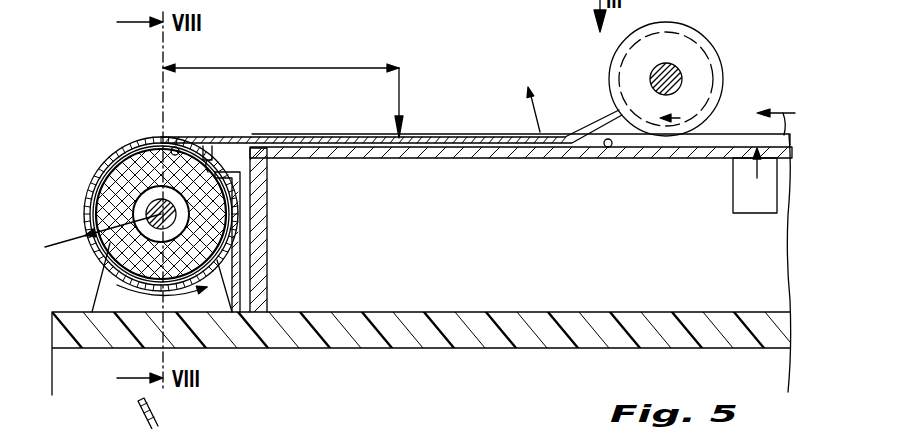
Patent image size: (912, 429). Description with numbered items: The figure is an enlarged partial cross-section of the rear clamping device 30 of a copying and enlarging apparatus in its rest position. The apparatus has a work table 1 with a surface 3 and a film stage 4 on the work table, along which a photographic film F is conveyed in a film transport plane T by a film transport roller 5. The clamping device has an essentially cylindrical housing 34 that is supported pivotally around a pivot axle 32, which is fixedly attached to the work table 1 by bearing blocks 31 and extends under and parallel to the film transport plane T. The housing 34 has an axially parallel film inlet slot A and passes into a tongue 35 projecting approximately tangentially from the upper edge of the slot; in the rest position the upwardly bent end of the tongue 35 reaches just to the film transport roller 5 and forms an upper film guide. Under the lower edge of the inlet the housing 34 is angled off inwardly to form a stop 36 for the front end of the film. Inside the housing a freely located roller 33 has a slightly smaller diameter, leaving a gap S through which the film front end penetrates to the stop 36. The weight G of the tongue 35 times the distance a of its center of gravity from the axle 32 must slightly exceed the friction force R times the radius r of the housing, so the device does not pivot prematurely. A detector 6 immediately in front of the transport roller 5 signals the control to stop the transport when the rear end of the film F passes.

The work table 1 is at (467, 337).
The surface of the work table 3 is at (72, 309).
The film stage 4 is at (487, 152).
The film transport roller 5 is at (692, 55).
The detector 6 is at (733, 182).
The rear clamping device 30 is at (180, 194).
The bearing blocks 31 is at (112, 298).
The pivot axle 32 is at (170, 216).
The roller 33 is at (113, 200).
The housing 34 is at (135, 140).
The tongue 35 is at (428, 138).
The stop 36 is at (230, 170).
The gap S is at (118, 175).
The film F is at (178, 147).
The film inlet slot A is at (210, 146).
The weight of the tongue G is at (398, 91).
The film transport plane T is at (610, 148).
The friction force R is at (117, 285).
The radius of the housing r is at (102, 231).
The distance of the center of gravity from the axle a is at (273, 68).